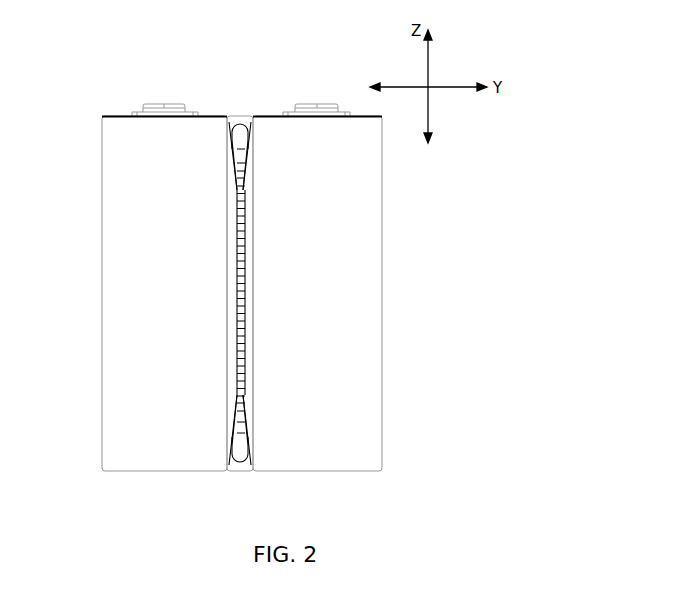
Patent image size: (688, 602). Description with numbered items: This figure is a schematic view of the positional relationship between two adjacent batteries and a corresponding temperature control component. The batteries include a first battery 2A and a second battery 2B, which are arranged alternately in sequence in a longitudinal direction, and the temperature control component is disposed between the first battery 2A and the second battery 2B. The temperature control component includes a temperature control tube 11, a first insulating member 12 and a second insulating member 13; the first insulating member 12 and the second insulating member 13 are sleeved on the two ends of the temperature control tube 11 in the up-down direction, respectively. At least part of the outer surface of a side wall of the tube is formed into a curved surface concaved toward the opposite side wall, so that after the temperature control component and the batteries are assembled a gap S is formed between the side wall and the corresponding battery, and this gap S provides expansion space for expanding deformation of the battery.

The first battery 2A is at (113, 242).
The second battery 2B is at (367, 292).
The temperature control tube 11 is at (250, 244).
The first insulating member 12 is at (243, 122).
The second insulating member 13 is at (240, 467).
The gap S is at (233, 322).